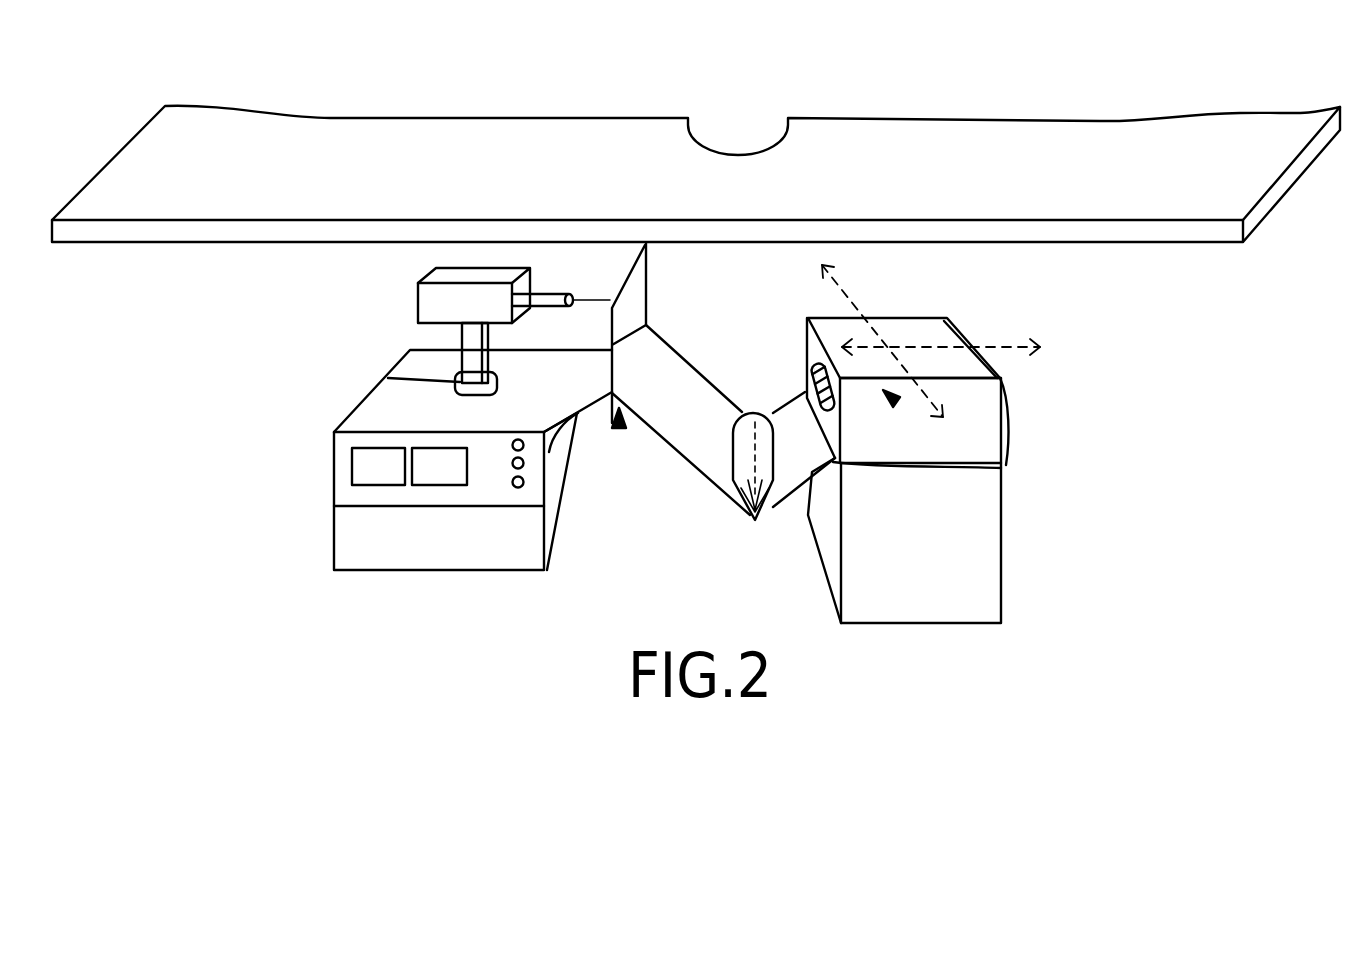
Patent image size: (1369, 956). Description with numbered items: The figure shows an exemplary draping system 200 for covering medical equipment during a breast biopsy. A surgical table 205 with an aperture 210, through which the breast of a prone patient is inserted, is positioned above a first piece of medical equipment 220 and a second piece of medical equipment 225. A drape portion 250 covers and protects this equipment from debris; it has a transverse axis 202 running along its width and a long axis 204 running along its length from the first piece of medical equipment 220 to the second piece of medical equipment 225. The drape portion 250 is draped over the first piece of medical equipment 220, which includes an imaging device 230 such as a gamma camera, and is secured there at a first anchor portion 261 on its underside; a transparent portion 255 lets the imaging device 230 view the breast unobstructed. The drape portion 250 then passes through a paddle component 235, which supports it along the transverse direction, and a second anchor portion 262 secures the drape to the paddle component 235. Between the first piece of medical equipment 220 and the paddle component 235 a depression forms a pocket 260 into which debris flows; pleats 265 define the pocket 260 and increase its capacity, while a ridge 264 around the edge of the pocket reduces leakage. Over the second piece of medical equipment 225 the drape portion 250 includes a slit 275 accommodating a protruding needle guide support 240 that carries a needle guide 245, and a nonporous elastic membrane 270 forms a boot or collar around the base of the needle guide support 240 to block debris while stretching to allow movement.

The draping system 200 is at (212, 580).
The transverse axis 202 is at (852, 302).
The long axis 204 is at (990, 350).
The surgical table 205 is at (160, 157).
The aperture 210 is at (730, 115).
The first piece of medical equipment 220 is at (939, 566).
The second piece of medical equipment 225 is at (462, 436).
The imaging device 230 is at (832, 360).
The paddle component 235 is at (647, 307).
The needle guide support 240 is at (388, 349).
The needle guide 245 is at (484, 316).
The drape portion 250 is at (930, 328).
The transparent portion 255 is at (813, 374).
The pocket 260 is at (732, 430).
The first anchor portion 261 is at (900, 405).
The second anchor portion 262 is at (620, 424).
The ridge 264 is at (733, 463).
The pleats 265 is at (736, 528).
The nonporous elastic membrane 270 is at (457, 383).
The slit 275 is at (388, 370).